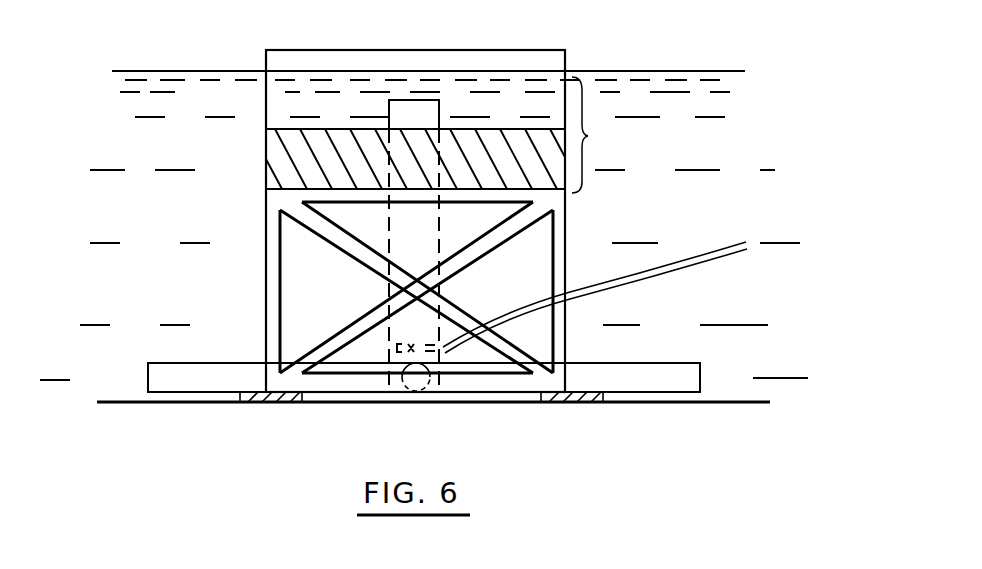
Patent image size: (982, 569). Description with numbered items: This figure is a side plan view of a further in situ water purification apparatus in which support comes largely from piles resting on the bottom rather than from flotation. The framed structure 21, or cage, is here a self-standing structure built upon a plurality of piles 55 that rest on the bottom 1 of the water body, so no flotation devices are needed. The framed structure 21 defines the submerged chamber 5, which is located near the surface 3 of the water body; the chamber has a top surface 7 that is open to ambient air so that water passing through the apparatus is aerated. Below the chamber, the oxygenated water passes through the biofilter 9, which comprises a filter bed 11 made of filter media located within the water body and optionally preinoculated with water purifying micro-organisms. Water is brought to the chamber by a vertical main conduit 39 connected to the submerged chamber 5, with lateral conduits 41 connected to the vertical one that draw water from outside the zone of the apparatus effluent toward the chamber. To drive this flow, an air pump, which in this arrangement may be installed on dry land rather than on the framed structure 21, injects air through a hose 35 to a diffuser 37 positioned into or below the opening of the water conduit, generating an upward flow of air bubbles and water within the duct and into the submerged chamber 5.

The bottom 1 is at (121, 364).
The surface 3 is at (632, 108).
The submerged chamber 5 is at (303, 95).
The top surface 7 is at (392, 50).
The biofilter 9 is at (589, 135).
The filter bed 11 is at (290, 158).
The framed structure 21 is at (224, 101).
The hose 35 is at (703, 262).
The diffuser 37 is at (403, 347).
The vertical main conduit 39 is at (420, 223).
The lateral conduits 41 is at (382, 393).
The piles 55 is at (262, 405).